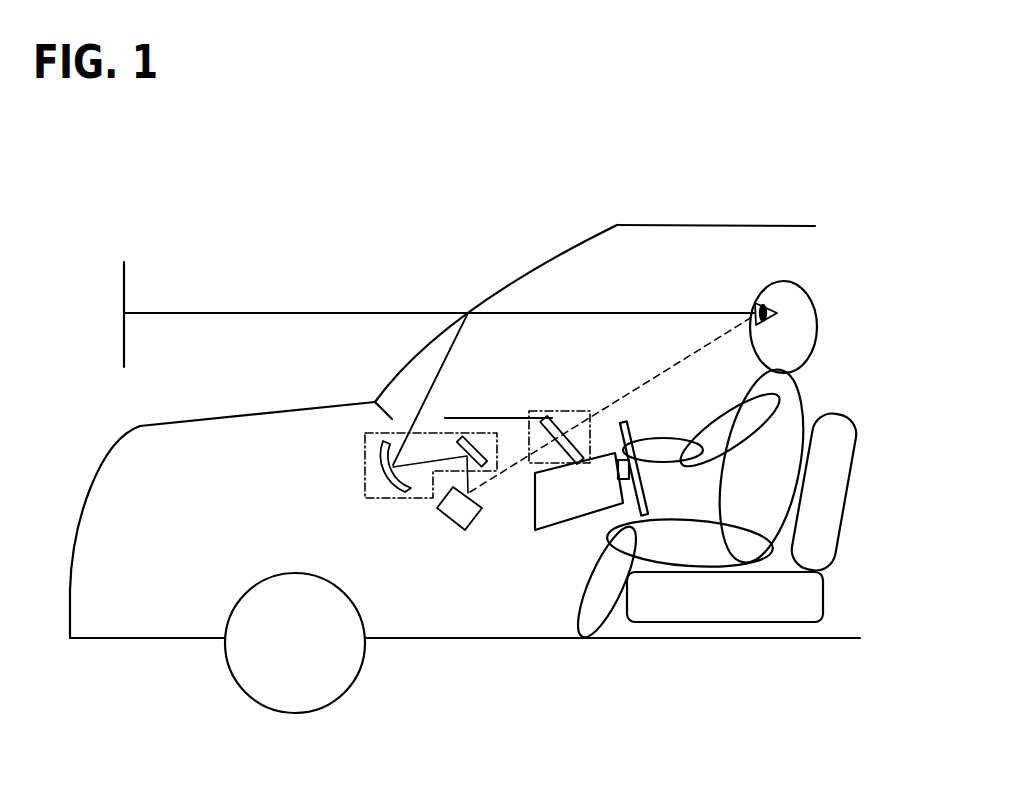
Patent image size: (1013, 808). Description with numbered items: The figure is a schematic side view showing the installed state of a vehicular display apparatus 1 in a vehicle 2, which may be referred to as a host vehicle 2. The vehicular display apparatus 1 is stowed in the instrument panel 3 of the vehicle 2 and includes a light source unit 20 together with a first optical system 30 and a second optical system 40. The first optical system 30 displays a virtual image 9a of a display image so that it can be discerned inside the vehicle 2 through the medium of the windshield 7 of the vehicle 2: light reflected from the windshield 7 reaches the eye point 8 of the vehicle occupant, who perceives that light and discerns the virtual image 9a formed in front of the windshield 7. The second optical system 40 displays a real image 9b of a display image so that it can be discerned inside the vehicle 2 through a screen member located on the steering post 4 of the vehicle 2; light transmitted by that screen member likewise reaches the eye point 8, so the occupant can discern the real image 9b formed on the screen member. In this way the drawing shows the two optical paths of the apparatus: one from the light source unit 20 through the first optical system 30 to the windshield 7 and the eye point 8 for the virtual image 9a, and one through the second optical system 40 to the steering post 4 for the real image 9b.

The vehicular display apparatus 1 is at (508, 539).
The vehicle 2 is at (786, 226).
The instrument panel 3 is at (513, 418).
The steering post 4 is at (578, 490).
The windshield 7 is at (538, 270).
The eye point 8 is at (755, 306).
The virtual image 9a is at (124, 263).
The real image 9b is at (533, 470).
The light source unit 20 is at (445, 518).
The first optical system 30 is at (365, 463).
The second optical system 40 is at (570, 411).